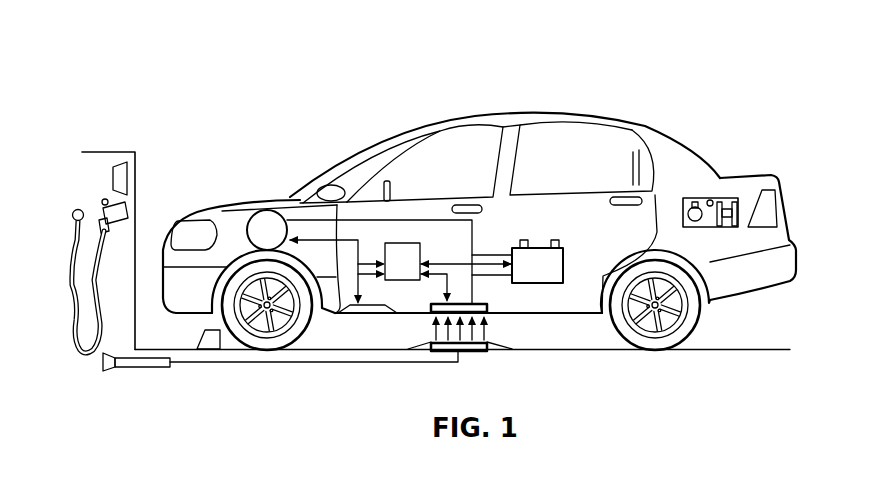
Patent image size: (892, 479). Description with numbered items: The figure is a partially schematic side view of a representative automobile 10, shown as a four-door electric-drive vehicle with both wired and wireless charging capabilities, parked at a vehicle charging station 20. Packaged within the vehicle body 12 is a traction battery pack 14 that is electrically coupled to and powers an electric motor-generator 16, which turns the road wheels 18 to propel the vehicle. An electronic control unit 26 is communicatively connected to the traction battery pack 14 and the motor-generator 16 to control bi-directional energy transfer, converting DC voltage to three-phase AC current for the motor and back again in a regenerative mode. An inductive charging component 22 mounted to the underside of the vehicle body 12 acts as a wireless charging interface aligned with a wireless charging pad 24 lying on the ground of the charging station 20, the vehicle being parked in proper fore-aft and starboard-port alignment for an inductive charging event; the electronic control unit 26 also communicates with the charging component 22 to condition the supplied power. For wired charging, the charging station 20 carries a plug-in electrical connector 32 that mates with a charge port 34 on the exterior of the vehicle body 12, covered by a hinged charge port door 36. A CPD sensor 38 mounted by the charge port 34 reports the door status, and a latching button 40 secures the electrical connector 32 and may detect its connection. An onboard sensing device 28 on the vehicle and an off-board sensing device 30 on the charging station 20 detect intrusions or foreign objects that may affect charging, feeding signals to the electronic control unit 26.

The automobile 10 is at (283, 78).
The vehicle body 12 is at (437, 120).
The traction battery pack 14 is at (550, 283).
The electric motor-generator 16 is at (279, 210).
The road wheel 18 is at (266, 350).
The vehicle charging station 20 is at (145, 130).
The inductive charging component 22 is at (427, 313).
The wireless charging pad 24 is at (475, 352).
The electronic control unit 26 is at (391, 271).
The onboard sensing device 28 is at (363, 313).
The off-board sensing device 30 is at (125, 162).
The electrical connector 32 is at (103, 207).
The charge port 34 is at (688, 198).
The charge port door 36 is at (736, 198).
The CPD sensor 38 is at (712, 200).
The latching button 40 is at (105, 200).